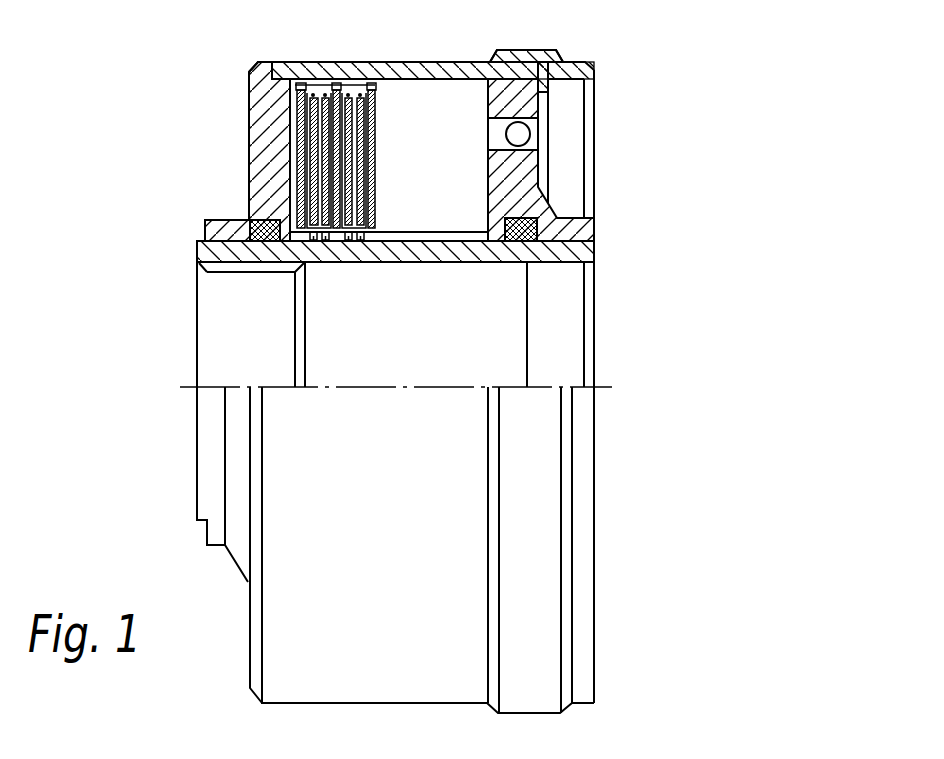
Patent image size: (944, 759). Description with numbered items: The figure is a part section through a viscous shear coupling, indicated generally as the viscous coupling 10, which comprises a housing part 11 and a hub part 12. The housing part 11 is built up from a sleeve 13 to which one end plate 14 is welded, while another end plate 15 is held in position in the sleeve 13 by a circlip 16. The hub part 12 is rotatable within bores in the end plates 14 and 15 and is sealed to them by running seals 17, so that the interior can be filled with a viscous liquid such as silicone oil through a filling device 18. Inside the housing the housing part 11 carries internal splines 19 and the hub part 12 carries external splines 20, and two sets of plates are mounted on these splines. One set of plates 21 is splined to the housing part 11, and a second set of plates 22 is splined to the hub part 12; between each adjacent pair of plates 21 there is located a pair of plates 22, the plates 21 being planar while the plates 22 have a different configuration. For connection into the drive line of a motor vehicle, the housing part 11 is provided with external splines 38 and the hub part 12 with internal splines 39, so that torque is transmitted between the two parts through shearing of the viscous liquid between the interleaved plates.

The viscous coupling 10 is at (353, 645).
The housing part 11 is at (449, 58).
The hub part 12 is at (443, 254).
The sleeve 13 is at (323, 70).
The end plate 14 is at (258, 132).
The end plate 15 is at (535, 207).
The circlip 16 is at (550, 86).
The running seals 17 is at (262, 222).
The filling device 18 is at (531, 137).
The internal splines 19 is at (416, 105).
The external splines 20 is at (419, 237).
The plates 21 is at (340, 80).
The plates 22 is at (328, 243).
The external splines 38 is at (532, 54).
The internal splines 39 is at (222, 270).